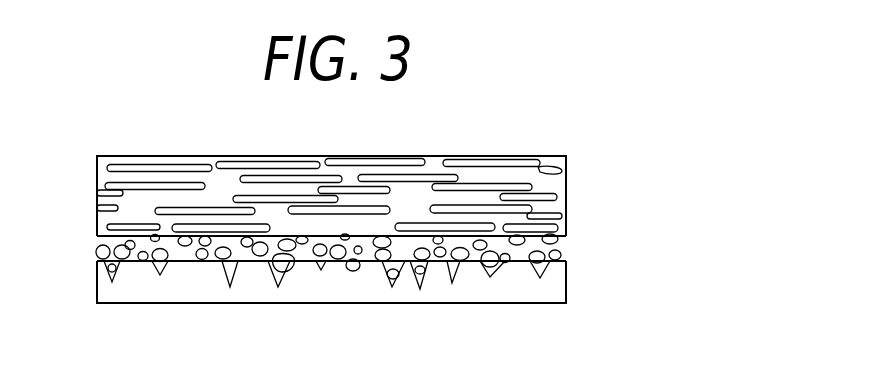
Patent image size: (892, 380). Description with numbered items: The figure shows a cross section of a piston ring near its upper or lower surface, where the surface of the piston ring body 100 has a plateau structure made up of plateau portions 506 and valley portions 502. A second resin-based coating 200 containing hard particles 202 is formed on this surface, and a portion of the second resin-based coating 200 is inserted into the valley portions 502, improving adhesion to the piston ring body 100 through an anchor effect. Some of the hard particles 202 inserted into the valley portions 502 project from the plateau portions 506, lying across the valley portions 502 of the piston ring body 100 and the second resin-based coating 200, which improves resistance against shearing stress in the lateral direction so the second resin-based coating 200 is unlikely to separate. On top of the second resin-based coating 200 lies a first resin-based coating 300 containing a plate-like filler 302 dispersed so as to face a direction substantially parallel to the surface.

The piston ring body 100 is at (533, 291).
The second resin-based coating 200 is at (178, 255).
The hard particles 202 is at (355, 262).
The first resin-based coating 300 is at (535, 177).
The plate-like filler 302 is at (530, 197).
The valley portions 502 is at (492, 268).
The plateau portions 506 is at (137, 258).